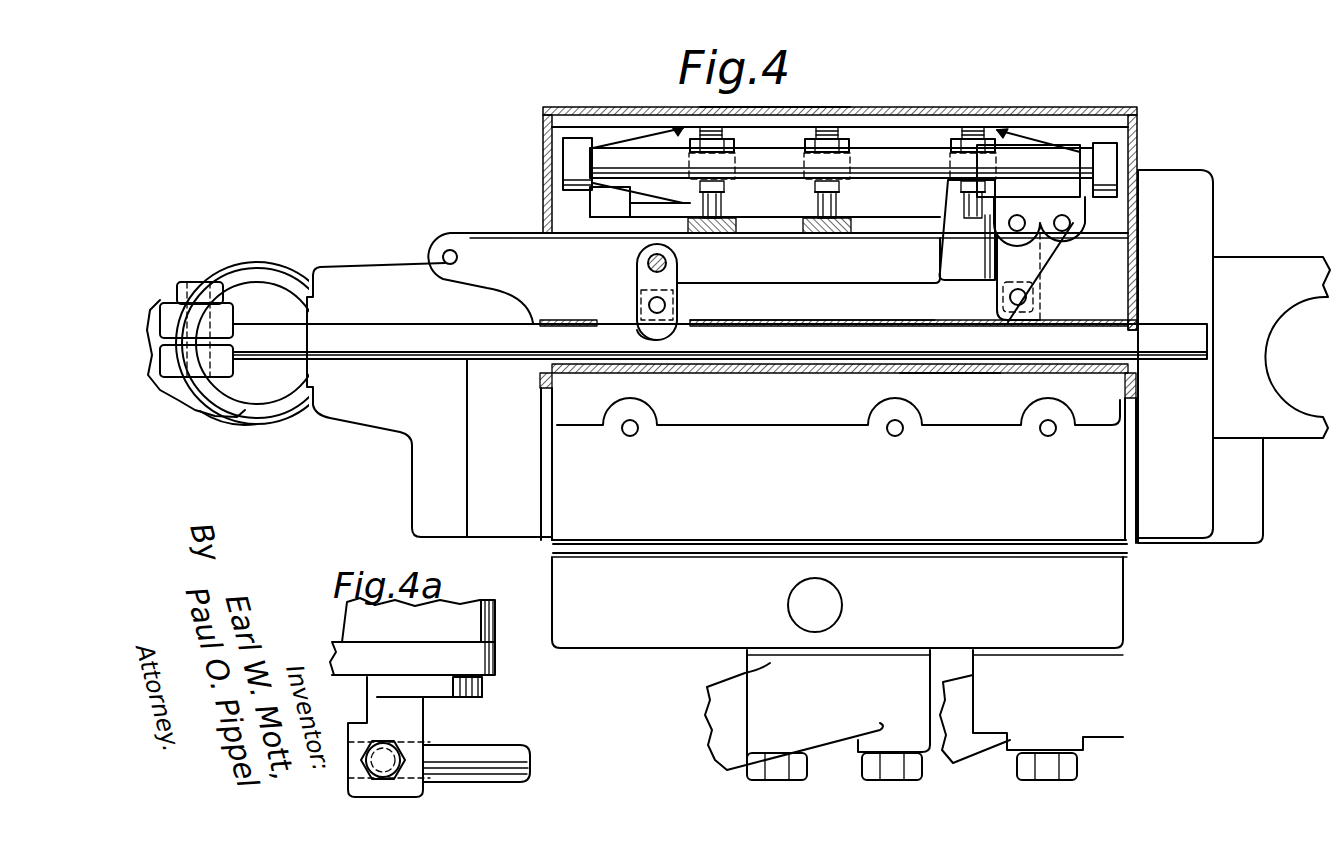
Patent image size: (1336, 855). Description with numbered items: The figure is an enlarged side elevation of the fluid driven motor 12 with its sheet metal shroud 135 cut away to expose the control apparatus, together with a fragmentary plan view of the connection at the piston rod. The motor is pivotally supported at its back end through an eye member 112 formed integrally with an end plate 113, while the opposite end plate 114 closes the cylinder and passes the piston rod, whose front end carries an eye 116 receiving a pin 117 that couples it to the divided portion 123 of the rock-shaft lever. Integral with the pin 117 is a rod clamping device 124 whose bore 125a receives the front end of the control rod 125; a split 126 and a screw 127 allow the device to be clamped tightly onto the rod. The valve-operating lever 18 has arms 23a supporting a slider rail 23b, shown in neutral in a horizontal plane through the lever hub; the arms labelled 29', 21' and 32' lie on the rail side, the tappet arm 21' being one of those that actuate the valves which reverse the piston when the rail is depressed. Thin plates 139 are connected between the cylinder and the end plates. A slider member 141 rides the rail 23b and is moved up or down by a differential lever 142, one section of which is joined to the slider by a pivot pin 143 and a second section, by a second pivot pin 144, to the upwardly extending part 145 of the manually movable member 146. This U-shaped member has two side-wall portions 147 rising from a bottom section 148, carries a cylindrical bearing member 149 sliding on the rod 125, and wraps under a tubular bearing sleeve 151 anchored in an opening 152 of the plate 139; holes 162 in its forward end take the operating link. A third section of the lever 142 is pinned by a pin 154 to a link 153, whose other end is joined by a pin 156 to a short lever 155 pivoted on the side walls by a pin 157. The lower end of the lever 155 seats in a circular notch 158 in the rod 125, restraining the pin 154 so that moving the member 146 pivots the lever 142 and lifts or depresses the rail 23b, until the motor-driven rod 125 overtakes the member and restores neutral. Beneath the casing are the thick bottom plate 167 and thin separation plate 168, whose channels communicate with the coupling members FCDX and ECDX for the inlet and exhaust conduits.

In FIG. 4, the motor 12 is at (1203, 170).
In FIG. 4, the valve-operating lever 18 is at (892, 135).
In FIG. 4, the arms 23a is at (622, 150).
In FIG. 4, the slider rail 23b is at (769, 162).
In FIG. 4, the nut 29' is at (735, 192).
In FIG. 4, the tappet arm 21' is at (848, 192).
In FIG. 4, the nut 32' is at (948, 194).
In FIG. 4, the shroud 135 is at (770, 108).
In FIG. 4, the thin plates 139 is at (1140, 116).
In FIG. 4, the slider member 141 is at (1046, 176).
In FIG. 4, the differential lever 142 is at (1055, 268).
In FIG. 4, the pivot pin 143 is at (1068, 228).
In FIG. 4, the second pivot pin 144 is at (1017, 232).
In FIG. 4, the upwardly extending part 145 is at (1000, 240).
In FIG. 4, the manually movable member 146 is at (520, 233).
In FIG. 4, the side-wall portions 147 is at (823, 272).
In FIG. 4, the bottom section 148 is at (798, 374).
In FIG. 4, the cylindrical bearing member 149 is at (561, 320).
In FIG. 4, the tubular bearing sleeve 151 is at (938, 374).
In FIG. 4, the opening 152 is at (1138, 325).
In FIG. 4, the link 153 is at (892, 300).
In FIG. 4, the pin 154 is at (1032, 300).
In FIG. 4, the short lever 155 is at (672, 283).
In FIG. 4, the pin 156 is at (650, 302).
In FIG. 4, the pin 157 is at (648, 262).
In FIG. 4, the notch 158 is at (637, 335).
In FIG. 4, the holes 162 is at (453, 248).
In FIG. 4, the bottom plate 167 is at (1118, 621).
In FIG. 4, the separation plate 168 is at (1121, 550).
In FIG. 4, the eye member 112 is at (1293, 272).
In FIG. 4, the end plate 113 is at (1168, 530).
In FIG. 4, the end plate 114 is at (475, 447).
In FIG. 4, the eye 116 is at (273, 272).
In FIG. 4A, the eye 116 is at (485, 628).
In FIG. 4, the pin 117 is at (242, 293).
In FIG. 4A, the pin 117 is at (485, 693).
In FIG. 4, the divided portion 123 is at (245, 412).
In FIG. 4A, the divided portion 123 is at (497, 665).
In FIG. 4, the rod clamping device 124 is at (165, 312).
In FIG. 4A, the rod clamping device 124 is at (415, 735).
In FIG. 4, the control rod 125 is at (402, 335).
In FIG. 4A, the control rod 125 is at (480, 748).
In FIG. 4A, the bore 125a is at (427, 778).
In FIG. 4, the split 126 is at (220, 360).
In FIG. 4, the screw 127 is at (196, 287).
In FIG. 4A, the screw 127 is at (383, 778).
In FIG. 4, the coupling member ECDX is at (828, 740).
In FIG. 4, the coupling member FCDX is at (972, 750).